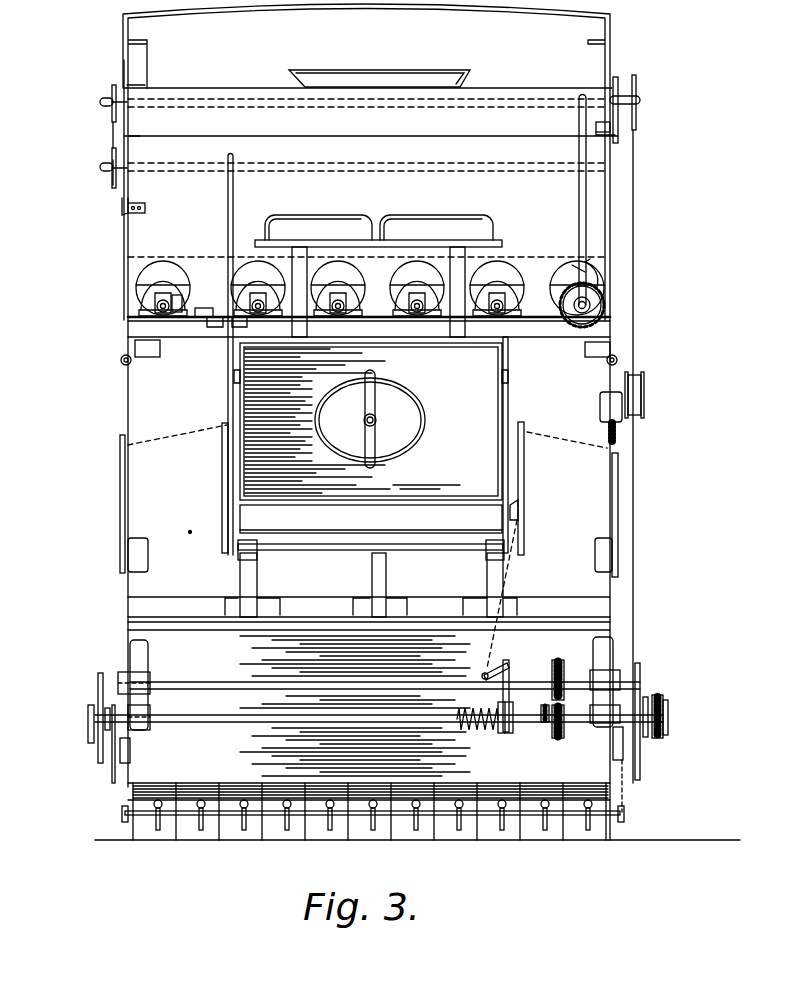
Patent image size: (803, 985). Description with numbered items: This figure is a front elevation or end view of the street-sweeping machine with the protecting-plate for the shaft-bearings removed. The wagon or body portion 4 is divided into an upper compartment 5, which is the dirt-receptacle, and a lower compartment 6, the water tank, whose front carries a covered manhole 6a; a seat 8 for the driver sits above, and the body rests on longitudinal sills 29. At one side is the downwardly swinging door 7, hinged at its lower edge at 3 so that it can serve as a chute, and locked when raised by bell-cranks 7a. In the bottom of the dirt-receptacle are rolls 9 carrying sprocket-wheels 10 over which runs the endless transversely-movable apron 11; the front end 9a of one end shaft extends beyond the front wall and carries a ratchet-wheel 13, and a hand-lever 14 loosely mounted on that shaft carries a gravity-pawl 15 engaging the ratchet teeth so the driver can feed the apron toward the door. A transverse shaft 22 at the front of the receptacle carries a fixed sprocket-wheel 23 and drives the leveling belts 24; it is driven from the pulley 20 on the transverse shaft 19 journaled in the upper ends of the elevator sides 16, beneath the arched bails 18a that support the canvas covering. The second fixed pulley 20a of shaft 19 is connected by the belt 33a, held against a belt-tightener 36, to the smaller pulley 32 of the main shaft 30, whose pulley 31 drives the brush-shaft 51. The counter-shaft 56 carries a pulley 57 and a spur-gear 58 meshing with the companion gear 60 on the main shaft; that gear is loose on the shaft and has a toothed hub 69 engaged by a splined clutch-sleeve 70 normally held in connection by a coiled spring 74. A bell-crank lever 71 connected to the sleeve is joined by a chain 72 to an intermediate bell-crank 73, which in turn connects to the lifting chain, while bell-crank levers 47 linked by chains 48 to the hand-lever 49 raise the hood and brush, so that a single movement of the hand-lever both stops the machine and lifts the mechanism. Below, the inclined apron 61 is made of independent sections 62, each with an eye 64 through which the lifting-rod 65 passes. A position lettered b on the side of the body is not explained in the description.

The arched bails 18a is at (374, 12).
The seat 8 is at (372, 74).
The transverse shaft 19 is at (119, 105).
The fixed pulley 20 is at (108, 101).
The belts 24 is at (108, 158).
The transverse shaft 22 is at (119, 171).
The fixed sprocket-wheel 23 is at (111, 187).
The line b is at (127, 136).
The swinging door 7 is at (617, 84).
The fixed pulley 20a is at (640, 98).
The bell-cranks 7a is at (575, 270).
The hand-lever 14 is at (584, 182).
The upper compartment 5 is at (368, 185).
The hand-lever 49 is at (228, 218).
The belt 33a is at (636, 234).
The endless apron 11 is at (181, 289).
The sprocket-wheels 10 is at (526, 300).
The rolls 9 is at (420, 317).
The ratchet-wheel 13 is at (580, 318).
The front end of end shaft 9a is at (601, 306).
The gravity-pawl 15 is at (600, 279).
The hinge 3 is at (122, 363).
The lower compartment 6 is at (371, 421).
The manhole 6a is at (423, 437).
The wagon or body portion 4 is at (511, 445).
The longitudinal sills 29 is at (371, 519).
The chains 48 is at (612, 391).
The belt-tightener 36 is at (645, 399).
The bell-crank levers 47 is at (650, 500).
The intermediate bell-crank 73 is at (537, 481).
The pulley 57 is at (122, 675).
The counter-shaft 56 is at (524, 682).
The spur-gear 58 is at (559, 661).
The companion gear 60 is at (555, 737).
The toothed hub 69 is at (541, 712).
The clutch-sleeve 70 is at (516, 729).
The coiled spring 74 is at (486, 731).
The bell-crank lever 71 is at (508, 664).
The chain or cable 72 is at (482, 660).
The smaller pulley 32 is at (658, 692).
The pulley 31 is at (663, 699).
The brush-shaft 51 is at (631, 760).
The main shaft 30 is at (355, 706).
The elevator-frame sides 16 is at (369, 764).
The apron sections 62 is at (474, 838).
The inclined apron or pan 61 is at (369, 822).
The lifting-rod 65 is at (123, 816).
The eye or loop 64 is at (419, 829).